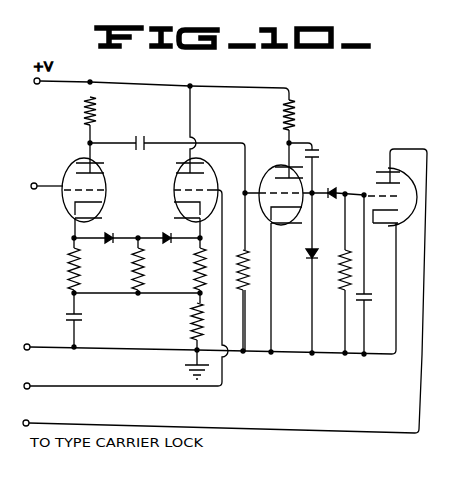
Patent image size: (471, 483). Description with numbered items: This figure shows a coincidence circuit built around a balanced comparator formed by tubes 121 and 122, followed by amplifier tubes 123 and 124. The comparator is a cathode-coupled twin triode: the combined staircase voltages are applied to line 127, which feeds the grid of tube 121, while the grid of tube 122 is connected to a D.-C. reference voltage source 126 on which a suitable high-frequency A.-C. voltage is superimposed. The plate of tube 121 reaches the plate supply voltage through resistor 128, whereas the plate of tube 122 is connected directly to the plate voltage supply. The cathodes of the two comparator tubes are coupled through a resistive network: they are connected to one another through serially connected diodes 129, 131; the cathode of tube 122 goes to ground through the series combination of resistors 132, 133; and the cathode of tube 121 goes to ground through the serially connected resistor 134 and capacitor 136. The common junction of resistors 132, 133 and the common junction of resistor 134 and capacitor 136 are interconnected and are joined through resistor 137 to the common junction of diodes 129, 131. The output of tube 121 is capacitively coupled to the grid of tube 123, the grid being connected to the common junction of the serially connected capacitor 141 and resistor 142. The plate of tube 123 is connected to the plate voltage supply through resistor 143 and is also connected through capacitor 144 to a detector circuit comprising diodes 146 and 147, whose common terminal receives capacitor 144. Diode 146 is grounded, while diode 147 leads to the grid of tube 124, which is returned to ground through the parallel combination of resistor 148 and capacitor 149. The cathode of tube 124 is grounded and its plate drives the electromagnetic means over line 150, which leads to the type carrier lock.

The tube 121 is at (72, 162).
The tube 122 is at (212, 172).
The amplifier tube 123 is at (278, 187).
The amplifier tube 124 is at (412, 186).
The D.-C. reference voltage source 126 is at (66, 389).
The line 127 is at (42, 176).
The resistor 128 is at (100, 112).
The diode 129 is at (121, 229).
The diode 131 is at (164, 236).
The resistor 132 is at (194, 270).
The resistor 133 is at (191, 322).
The resistor 134 is at (68, 268).
The capacitor 136 is at (66, 314).
The resistor 137 is at (132, 270).
The capacitor 141 is at (147, 137).
The resistor 142 is at (250, 281).
The resistor 143 is at (297, 110).
The capacitor 144 is at (316, 147).
The diode 146 is at (305, 261).
The diode 147 is at (335, 188).
The resistor 148 is at (341, 253).
The capacitor 149 is at (368, 290).
The line 150 is at (63, 427).